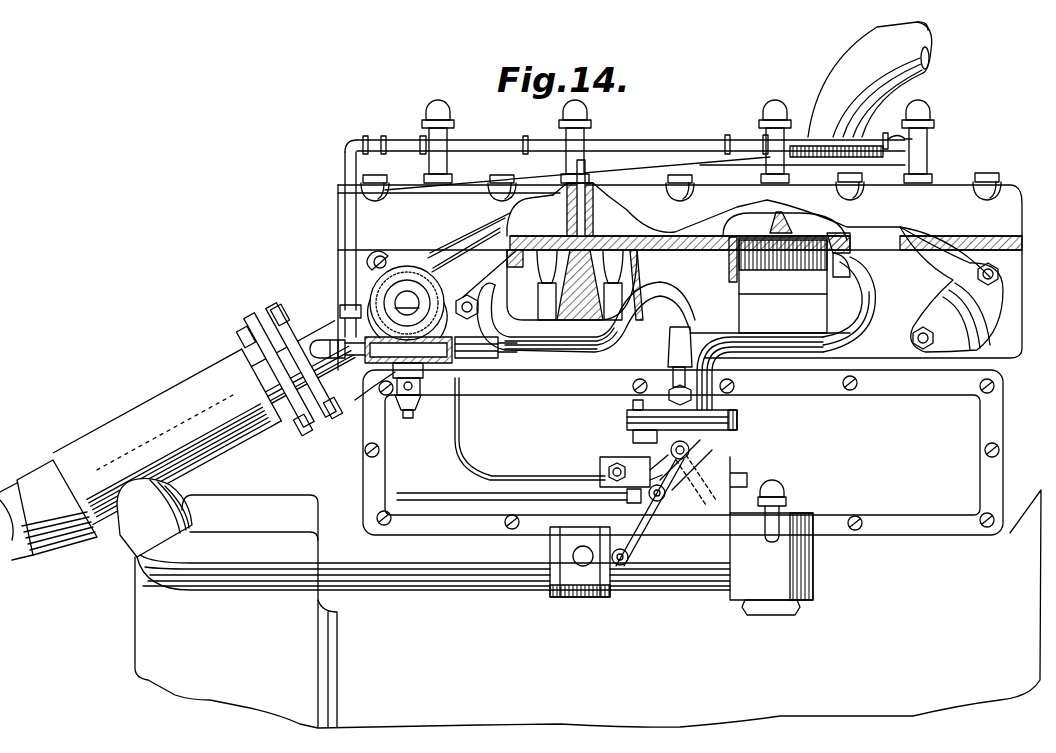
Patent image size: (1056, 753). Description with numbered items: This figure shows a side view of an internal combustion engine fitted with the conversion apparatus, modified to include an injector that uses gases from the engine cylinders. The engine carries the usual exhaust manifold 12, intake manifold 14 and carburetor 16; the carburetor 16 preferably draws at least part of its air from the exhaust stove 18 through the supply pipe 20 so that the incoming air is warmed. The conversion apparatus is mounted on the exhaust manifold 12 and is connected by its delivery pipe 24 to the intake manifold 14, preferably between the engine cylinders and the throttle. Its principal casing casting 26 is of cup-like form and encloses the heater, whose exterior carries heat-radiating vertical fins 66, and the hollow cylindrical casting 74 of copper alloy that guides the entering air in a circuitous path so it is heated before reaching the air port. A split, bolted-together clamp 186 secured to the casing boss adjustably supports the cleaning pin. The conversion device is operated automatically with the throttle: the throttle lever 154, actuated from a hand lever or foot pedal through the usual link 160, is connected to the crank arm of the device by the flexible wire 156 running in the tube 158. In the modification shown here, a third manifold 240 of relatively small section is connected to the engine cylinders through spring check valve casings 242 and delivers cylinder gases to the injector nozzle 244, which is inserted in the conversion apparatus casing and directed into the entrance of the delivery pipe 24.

The exhaust manifold 12 is at (478, 231).
The intake manifold 14 is at (722, 323).
The carburetor 16 is at (680, 567).
The exhaust stove 18 is at (228, 458).
The supply pipe 20 is at (430, 570).
The delivery pipe 24 is at (470, 366).
The casing casting 26 is at (478, 254).
The vertical fins 66 is at (478, 269).
The hollow cylindrical casting 74 is at (482, 238).
The throttle lever 154 is at (673, 497).
The flexible wire 156 is at (620, 460).
The tube 158 is at (497, 475).
The link 160 is at (470, 497).
The clamp 186 is at (413, 402).
The third manifold 240 is at (630, 147).
The spring check valve casings 242 is at (783, 110).
The injector nozzle 244 is at (347, 365).